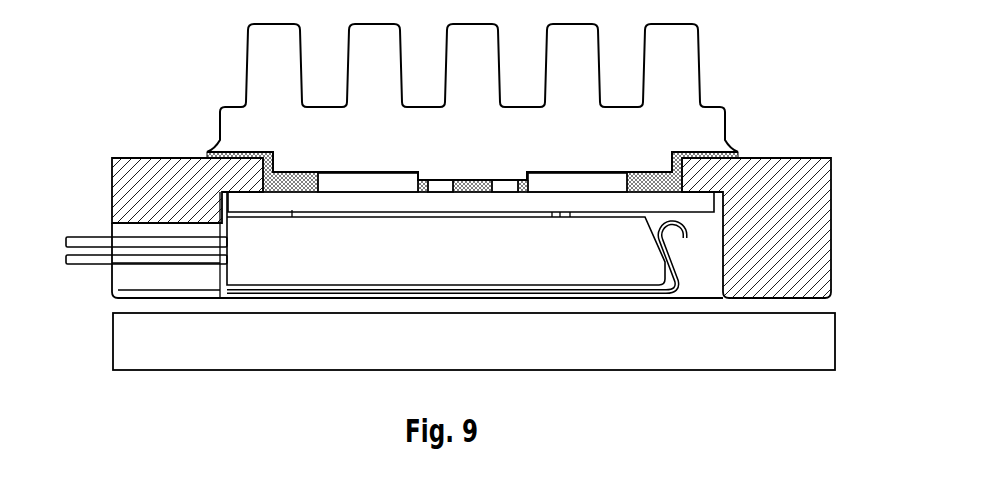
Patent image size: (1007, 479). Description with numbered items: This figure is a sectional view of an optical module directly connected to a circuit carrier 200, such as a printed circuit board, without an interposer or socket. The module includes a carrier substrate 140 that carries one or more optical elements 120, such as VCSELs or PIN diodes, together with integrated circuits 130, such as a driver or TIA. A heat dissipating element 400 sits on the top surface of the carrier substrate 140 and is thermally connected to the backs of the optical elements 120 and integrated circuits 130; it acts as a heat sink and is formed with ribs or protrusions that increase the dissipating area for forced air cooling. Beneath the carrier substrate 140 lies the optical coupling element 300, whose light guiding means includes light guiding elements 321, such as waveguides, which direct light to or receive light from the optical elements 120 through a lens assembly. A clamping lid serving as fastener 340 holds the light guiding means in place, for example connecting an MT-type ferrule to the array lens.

The heat dissipating element 400 is at (256, 65).
The carrier substrate 140 is at (147, 165).
The integrated circuit 130 is at (366, 179).
The optical element 120 is at (440, 184).
The optical coupling element 300 is at (330, 267).
The MT-ferrule / clamping lid fastener 340 is at (644, 295).
The light guiding element 321 is at (135, 238).
The circuit carrier 200 is at (185, 353).